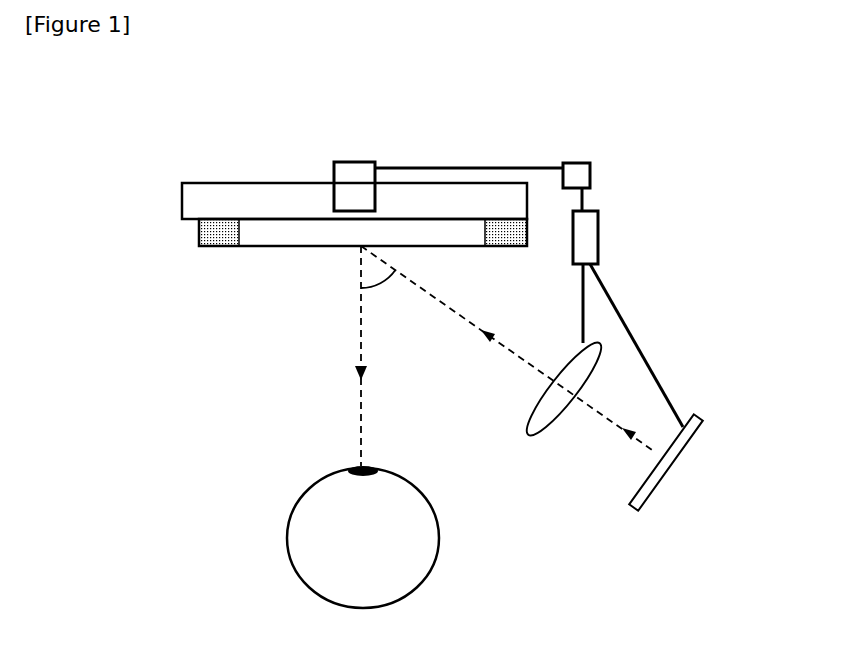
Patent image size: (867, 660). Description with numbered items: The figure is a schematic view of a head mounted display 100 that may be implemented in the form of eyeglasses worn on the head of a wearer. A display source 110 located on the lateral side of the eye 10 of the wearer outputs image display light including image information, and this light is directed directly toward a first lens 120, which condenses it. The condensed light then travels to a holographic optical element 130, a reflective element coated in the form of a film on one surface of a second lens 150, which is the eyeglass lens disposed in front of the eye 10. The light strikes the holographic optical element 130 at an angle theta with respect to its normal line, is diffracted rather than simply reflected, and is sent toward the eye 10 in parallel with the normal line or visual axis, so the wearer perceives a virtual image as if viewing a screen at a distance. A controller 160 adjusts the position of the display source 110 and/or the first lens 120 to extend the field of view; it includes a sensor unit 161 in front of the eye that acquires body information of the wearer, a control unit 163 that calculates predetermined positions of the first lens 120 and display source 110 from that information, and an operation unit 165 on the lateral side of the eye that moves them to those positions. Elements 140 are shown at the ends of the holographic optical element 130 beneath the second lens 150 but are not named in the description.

The head mounted display 100 is at (620, 160).
The eye 10 is at (287, 520).
The display source 110 is at (702, 420).
The first lens 120 is at (600, 345).
The holographic optical element 130 is at (257, 246).
The spacer 140 is at (199, 235).
The second lens 150 is at (182, 202).
The controller 160 is at (712, 552).
The sensor unit 161 is at (355, 180).
The control unit 163 is at (577, 170).
The operation unit 165 is at (590, 240).